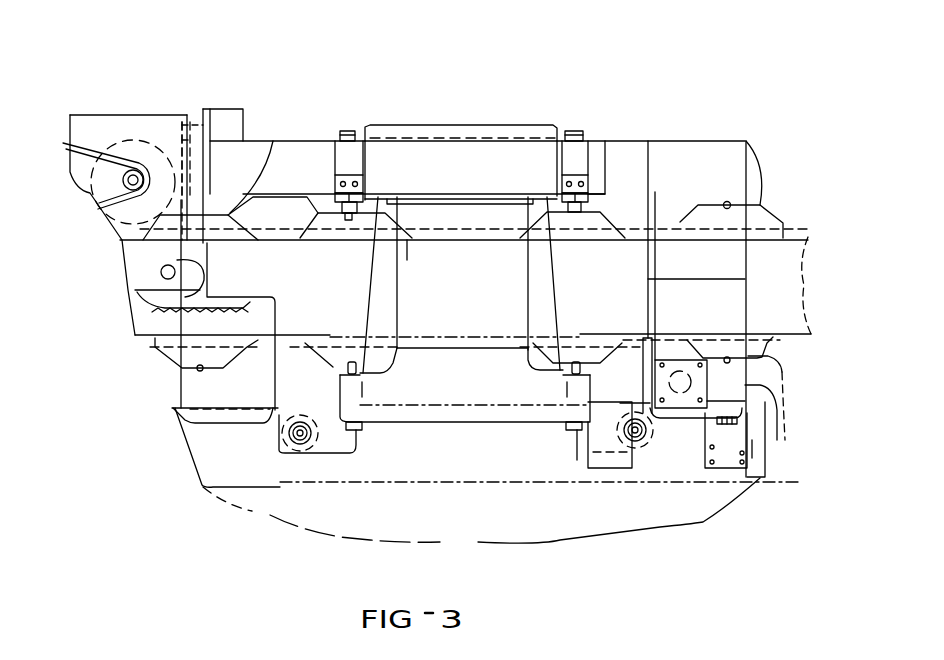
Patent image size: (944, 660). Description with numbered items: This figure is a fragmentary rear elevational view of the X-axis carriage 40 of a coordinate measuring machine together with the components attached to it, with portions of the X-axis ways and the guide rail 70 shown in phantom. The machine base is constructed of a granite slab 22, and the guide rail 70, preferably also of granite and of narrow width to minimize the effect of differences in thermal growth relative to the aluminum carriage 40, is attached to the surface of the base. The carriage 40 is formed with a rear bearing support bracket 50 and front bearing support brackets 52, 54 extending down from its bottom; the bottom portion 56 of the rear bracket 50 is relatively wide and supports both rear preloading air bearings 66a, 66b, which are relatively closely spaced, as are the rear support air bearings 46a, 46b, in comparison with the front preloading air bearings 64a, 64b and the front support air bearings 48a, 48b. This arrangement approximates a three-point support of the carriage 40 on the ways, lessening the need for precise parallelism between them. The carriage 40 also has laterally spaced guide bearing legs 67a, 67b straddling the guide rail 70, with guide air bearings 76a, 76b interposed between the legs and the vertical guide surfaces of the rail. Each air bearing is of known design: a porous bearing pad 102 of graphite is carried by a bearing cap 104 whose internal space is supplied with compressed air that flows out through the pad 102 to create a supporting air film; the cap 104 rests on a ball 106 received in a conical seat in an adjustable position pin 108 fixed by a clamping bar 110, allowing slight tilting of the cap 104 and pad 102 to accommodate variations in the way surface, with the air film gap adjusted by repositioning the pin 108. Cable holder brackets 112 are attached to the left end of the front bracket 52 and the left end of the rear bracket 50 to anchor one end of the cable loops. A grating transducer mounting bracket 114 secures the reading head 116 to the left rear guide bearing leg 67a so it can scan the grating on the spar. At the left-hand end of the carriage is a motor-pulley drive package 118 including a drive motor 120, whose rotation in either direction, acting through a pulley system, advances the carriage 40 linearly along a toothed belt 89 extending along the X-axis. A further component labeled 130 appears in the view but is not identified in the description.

The granite slab 22 is at (252, 483).
The X-axis carriage 40 is at (503, 127).
The rear support air bearing 46a is at (615, 207).
The rear support air bearing 46b is at (318, 212).
The front support air bearing 48a is at (760, 167).
The front support air bearing 48b is at (253, 177).
The rear bearing support bracket 50 is at (529, 319).
The front bearing support bracket 52 is at (750, 455).
The front bearing support bracket 54 is at (180, 393).
The bottom portion of rear bracket 56 is at (470, 388).
The front preloading air bearing 64a is at (792, 402).
The front preloading air bearing 64b is at (165, 355).
The rear preloading air bearing 66a is at (630, 363).
The rear preloading air bearing 66b is at (337, 352).
The guide bearing leg 67a is at (574, 444).
The guide bearing leg 67b is at (355, 432).
The guide rail 70 is at (194, 452).
The guide air bearing 76a is at (650, 440).
The guide air bearing 76b is at (283, 443).
The toothed belt 89 is at (200, 312).
The porous bearing pad 102 is at (405, 240).
The bearing cap 104 is at (391, 226).
The ball 106 is at (348, 220).
The adjustable position pin 108 is at (364, 195).
The clamping bar 110 is at (343, 173).
The cable holder bracket 112 is at (577, 460).
The grating transducer mounting bracket 114 is at (670, 408).
The reading head 116 is at (685, 395).
The motor-pulley drive package 118 is at (133, 114).
The drive motor 120 is at (139, 138).
The hook 130 is at (200, 283).